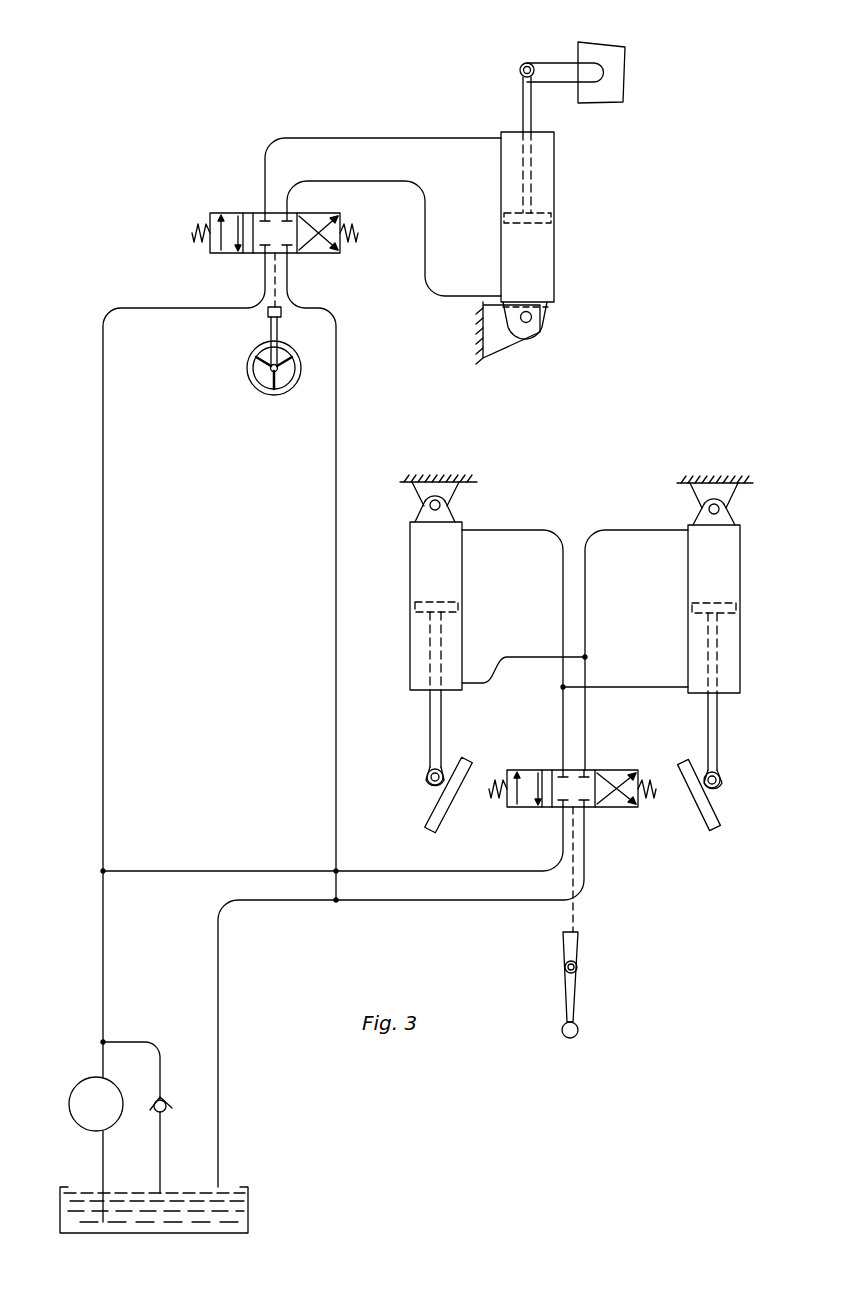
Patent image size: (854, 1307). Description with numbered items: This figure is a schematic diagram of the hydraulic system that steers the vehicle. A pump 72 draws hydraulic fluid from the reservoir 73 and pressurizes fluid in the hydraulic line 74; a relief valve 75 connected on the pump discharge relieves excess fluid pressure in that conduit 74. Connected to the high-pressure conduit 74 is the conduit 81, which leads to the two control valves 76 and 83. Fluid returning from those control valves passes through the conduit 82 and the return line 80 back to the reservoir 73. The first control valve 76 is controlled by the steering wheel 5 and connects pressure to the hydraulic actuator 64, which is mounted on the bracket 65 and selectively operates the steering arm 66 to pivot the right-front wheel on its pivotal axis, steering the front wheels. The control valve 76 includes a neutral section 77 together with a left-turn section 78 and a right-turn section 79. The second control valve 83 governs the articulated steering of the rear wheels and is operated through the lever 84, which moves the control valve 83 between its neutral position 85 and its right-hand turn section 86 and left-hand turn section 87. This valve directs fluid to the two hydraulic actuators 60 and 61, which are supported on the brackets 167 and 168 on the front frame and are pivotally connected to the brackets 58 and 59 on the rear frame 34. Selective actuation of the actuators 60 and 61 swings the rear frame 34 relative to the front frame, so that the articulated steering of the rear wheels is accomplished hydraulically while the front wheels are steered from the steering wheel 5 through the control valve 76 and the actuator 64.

The steering wheel 5 is at (250, 374).
The rear frame 34 is at (762, 832).
The bracket 58 is at (720, 791).
The bracket 59 is at (425, 796).
The hydraulic actuator 60 is at (739, 594).
The hydraulic actuator 61 is at (412, 578).
The hydraulic actuator 64 is at (548, 255).
The bracket 65 is at (522, 336).
The steering arm 66 is at (549, 66).
The pump 72 is at (69, 1104).
The reservoir 73 is at (62, 1206).
The hydraulic line 74 is at (100, 931).
The relief valve 75 is at (164, 1100).
The control valve 76 is at (271, 243).
The neutral section 77 is at (262, 255).
The left-turn section 78 is at (216, 213).
The right-turn section 79 is at (342, 221).
The return line 80 is at (336, 575).
The conduit 81 is at (402, 871).
The conduit 82 is at (405, 902).
The control valve 83 is at (582, 833).
The lever 84 is at (580, 997).
The neutral position 85 is at (586, 771).
The right-hand turn section 86 is at (514, 770).
The left-hand turn section 87 is at (636, 772).
The bracket 167 is at (738, 492).
The bracket 168 is at (463, 496).